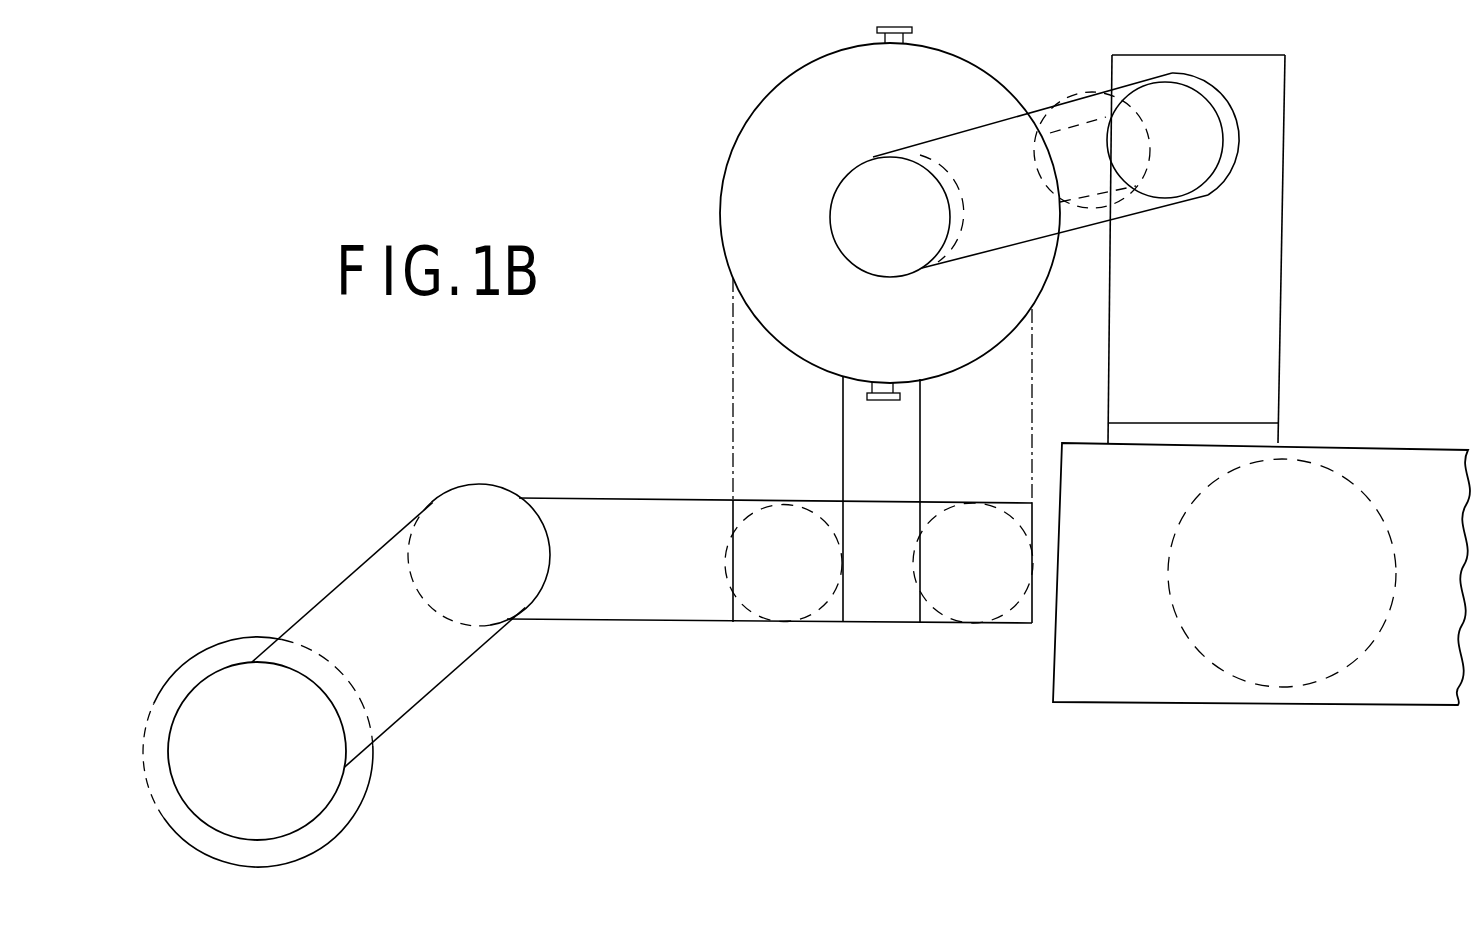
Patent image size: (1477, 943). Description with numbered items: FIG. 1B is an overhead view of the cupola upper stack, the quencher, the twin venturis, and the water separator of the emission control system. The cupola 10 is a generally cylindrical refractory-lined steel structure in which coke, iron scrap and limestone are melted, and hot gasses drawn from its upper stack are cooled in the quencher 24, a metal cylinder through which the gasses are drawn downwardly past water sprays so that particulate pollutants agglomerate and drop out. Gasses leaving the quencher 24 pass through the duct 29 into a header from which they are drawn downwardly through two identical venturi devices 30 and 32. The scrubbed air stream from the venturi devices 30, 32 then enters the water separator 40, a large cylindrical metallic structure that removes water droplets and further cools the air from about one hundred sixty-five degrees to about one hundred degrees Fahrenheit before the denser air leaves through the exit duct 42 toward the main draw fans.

The cupola 10 is at (368, 784).
The quencher 24 is at (527, 606).
The duct 29 is at (566, 498).
The venturi device 30 is at (815, 623).
The venturi device 32 is at (938, 623).
The water separator 40 is at (728, 266).
The exit duct 42 is at (1087, 228).